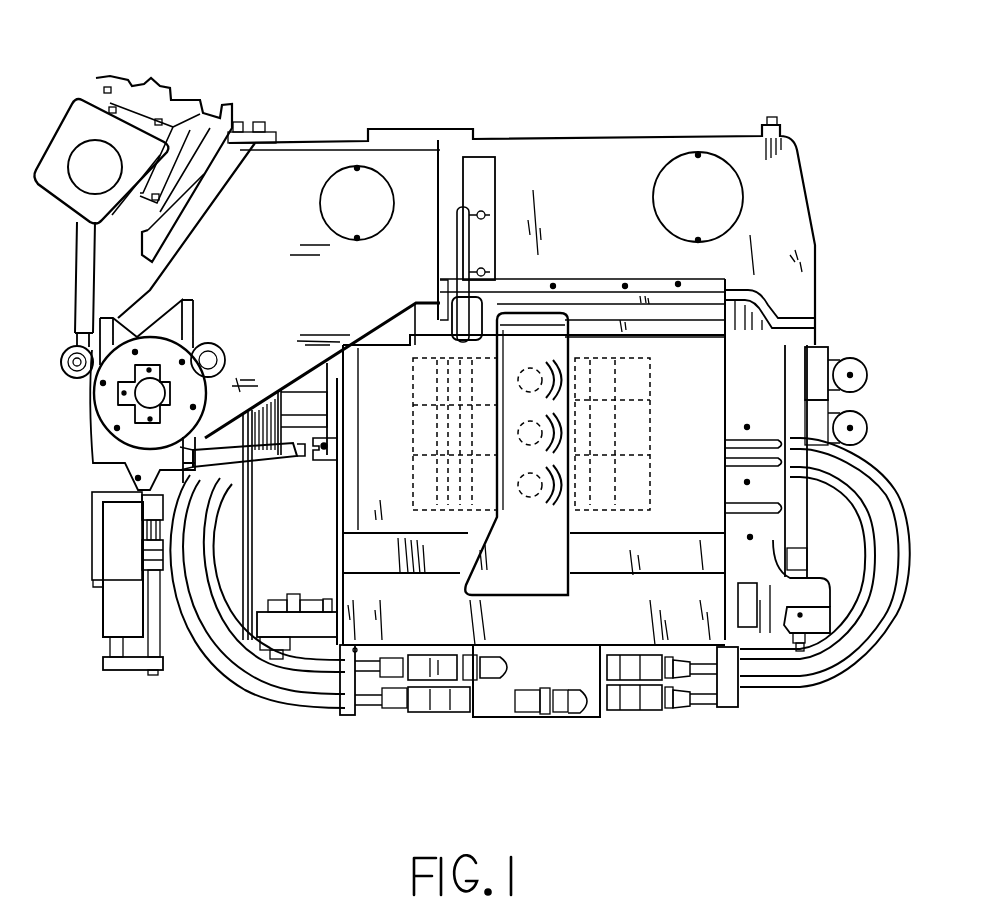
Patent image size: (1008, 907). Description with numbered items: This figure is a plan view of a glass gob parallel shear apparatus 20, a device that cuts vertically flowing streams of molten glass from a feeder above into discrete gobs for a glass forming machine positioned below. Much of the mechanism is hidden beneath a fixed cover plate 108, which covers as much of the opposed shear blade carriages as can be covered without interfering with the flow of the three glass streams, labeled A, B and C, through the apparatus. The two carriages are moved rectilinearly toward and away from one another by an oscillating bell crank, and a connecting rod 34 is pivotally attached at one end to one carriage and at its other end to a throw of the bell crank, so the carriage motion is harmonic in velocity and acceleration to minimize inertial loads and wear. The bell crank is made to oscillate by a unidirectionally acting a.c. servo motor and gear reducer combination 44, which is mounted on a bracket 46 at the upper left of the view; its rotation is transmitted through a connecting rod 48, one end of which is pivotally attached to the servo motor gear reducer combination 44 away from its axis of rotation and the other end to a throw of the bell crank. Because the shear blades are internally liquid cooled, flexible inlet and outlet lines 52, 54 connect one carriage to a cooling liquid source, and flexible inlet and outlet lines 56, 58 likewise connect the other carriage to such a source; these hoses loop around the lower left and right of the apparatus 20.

The parallel shear apparatus 20 is at (648, 65).
The connecting rod 34 is at (262, 458).
The servo motor and gear reducer combination 44 is at (52, 185).
The bracket 46 is at (150, 104).
The connecting rod 48 is at (76, 289).
The inlet line 52 is at (318, 705).
The outlet line 54 is at (245, 655).
The inlet line 56 is at (797, 697).
The outlet line 58 is at (835, 662).
The cover plate 108 is at (397, 472).